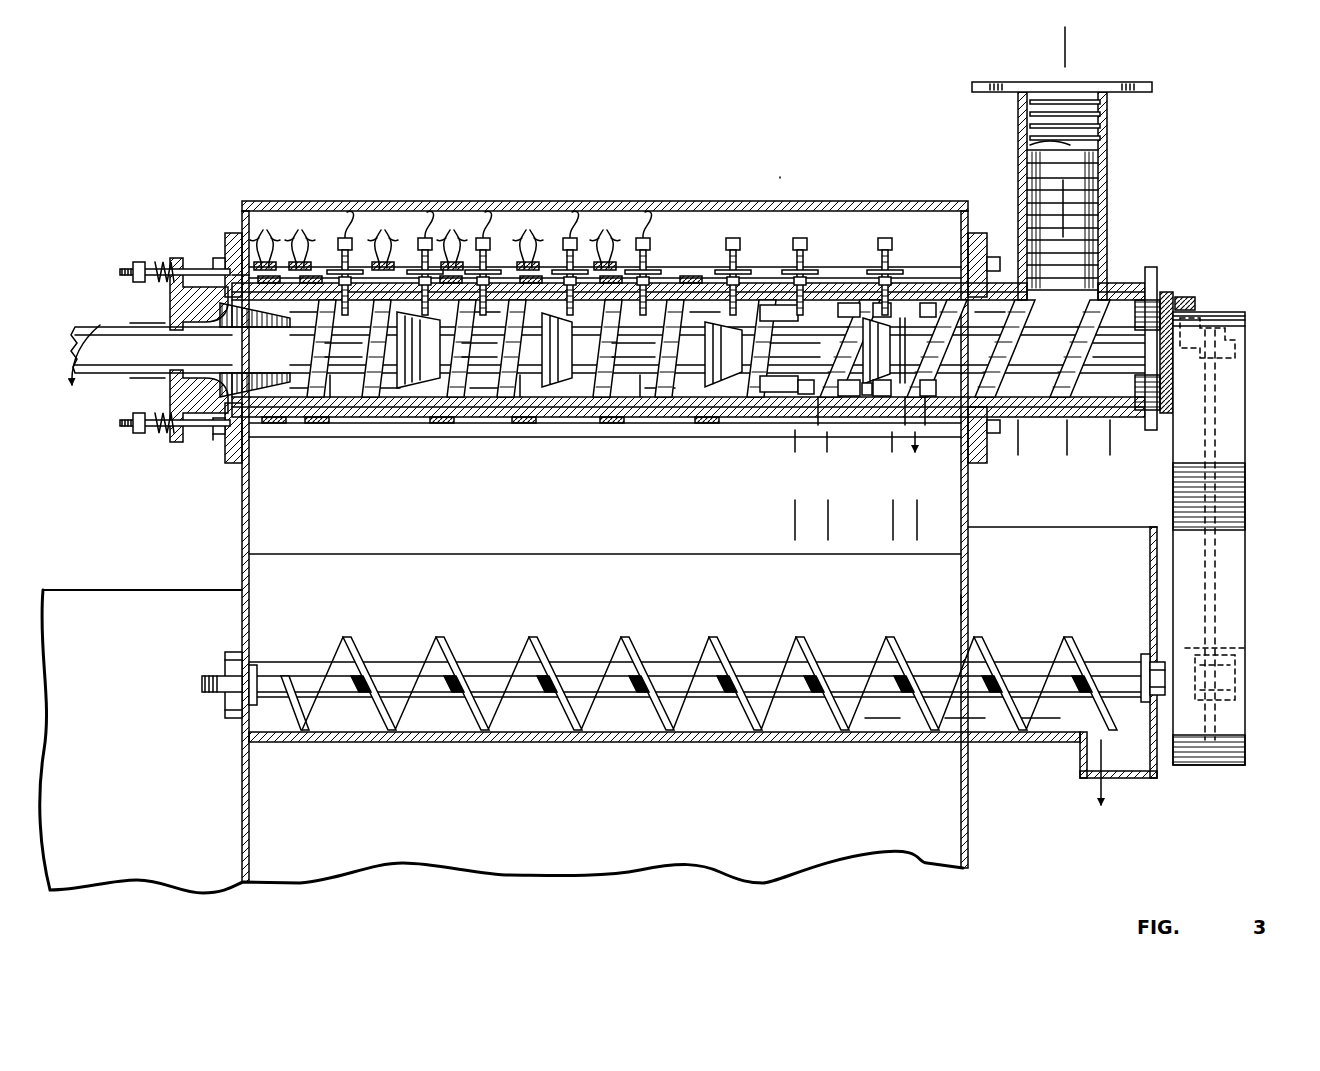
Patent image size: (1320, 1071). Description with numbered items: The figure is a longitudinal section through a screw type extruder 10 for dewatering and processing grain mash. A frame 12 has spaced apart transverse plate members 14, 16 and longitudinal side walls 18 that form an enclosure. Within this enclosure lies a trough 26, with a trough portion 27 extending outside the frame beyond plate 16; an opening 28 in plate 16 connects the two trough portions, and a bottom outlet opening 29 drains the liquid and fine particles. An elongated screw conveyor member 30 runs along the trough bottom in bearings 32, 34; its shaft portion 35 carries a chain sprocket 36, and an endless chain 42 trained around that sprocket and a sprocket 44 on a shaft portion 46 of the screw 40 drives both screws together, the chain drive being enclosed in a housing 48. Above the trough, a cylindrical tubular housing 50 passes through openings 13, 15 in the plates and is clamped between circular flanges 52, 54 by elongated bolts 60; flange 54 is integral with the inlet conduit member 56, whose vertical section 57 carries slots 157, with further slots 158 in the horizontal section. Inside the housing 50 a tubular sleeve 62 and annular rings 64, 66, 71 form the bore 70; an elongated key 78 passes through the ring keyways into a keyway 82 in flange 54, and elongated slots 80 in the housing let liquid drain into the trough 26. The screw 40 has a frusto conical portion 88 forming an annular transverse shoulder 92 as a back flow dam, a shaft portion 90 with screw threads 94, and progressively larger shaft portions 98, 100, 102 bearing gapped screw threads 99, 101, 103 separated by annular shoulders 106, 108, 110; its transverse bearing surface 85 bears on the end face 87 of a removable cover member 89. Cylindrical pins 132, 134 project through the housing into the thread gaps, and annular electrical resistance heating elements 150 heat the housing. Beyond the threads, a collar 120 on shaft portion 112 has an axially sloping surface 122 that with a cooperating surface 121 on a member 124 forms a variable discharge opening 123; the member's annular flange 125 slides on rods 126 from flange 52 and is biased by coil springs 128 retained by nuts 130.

The screw type extruder 10 is at (780, 178).
The frame 12 is at (242, 526).
The opening 13 is at (270, 252).
The transverse plate member 14 is at (240, 501).
The opening 15 is at (962, 263).
The transverse plate member 16 is at (968, 497).
The longitudinal side walls 18 is at (112, 590).
The trough 26 is at (388, 550).
The trough portion 27 is at (1065, 524).
The opening 28 is at (968, 605).
The bottom outlet opening 29 is at (1155, 778).
The screw conveyor member 30 is at (543, 646).
The bearing 32 is at (225, 656).
The bearing 34 is at (1145, 655).
The shaft portion 35 is at (1234, 693).
The chain sprocket 36 is at (1248, 650).
The screw 40 is at (1052, 312).
The endless chain 42 is at (1218, 460).
The sprocket 44 is at (1220, 320).
The shaft portion 46 is at (1180, 304).
The housing 48 is at (1245, 404).
The cylindrical tubular housing 50 is at (652, 295).
The circular flange 52 is at (234, 238).
The circular flange 54 is at (986, 234).
The inlet conduit member 56 is at (1110, 182).
The vertical section 57 is at (1102, 140).
The elongated bolts 60 is at (560, 435).
The tubular sleeve 62 is at (370, 397).
The annular ring 64 is at (904, 342).
The annular ring 66 is at (904, 430).
The bore 70 is at (780, 403).
The annular ring 71 is at (818, 425).
The elongated key 78 is at (864, 402).
The elongated slots 80 is at (707, 400).
The keyway 82 is at (927, 398).
The transverse bearing surface 85 is at (1131, 356).
The end face 87 is at (1148, 397).
The frusto conical portion 88 is at (878, 296).
The removable cover member 89 is at (1172, 360).
The shaft portion 90 is at (760, 312).
The annular transverse shoulder 92 is at (858, 348).
The screw threads 94 is at (819, 358).
The shaft portion 98 is at (640, 397).
The screw threads 99 is at (649, 356).
The shaft portion 100 is at (520, 397).
The screw threads 101 is at (502, 356).
The shaft portion 102 is at (330, 397).
The screw threads 103 is at (364, 356).
The annular shoulder 106 is at (673, 350).
The annular shoulder 108 is at (540, 360).
The annular shoulder 110 is at (392, 350).
The shaft portion 112 is at (113, 314).
The collar 120 is at (250, 335).
The cooperating surface 121 is at (214, 438).
The axially sloping surface 122 is at (254, 326).
The opening 123 is at (222, 326).
The member 124 is at (185, 305).
The annular flange 125 is at (184, 437).
The rods 126 is at (122, 271).
The coil springs 128 is at (162, 262).
The nuts 130 is at (138, 262).
The cylindrical pins 132 is at (352, 235).
The cylindrical pins 134 is at (800, 260).
The annular electrical resistance heating elements 150 is at (304, 259).
The slots 157 is at (1100, 117).
The slots 158 is at (1147, 267).